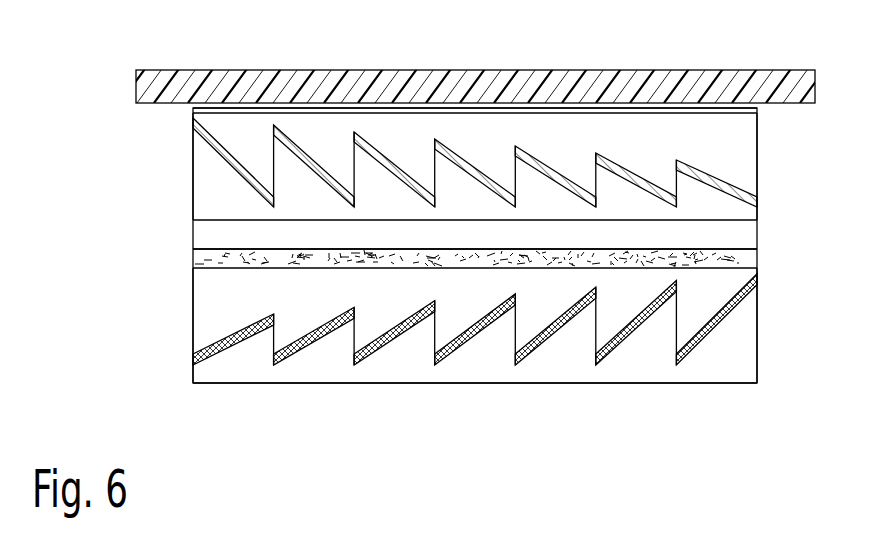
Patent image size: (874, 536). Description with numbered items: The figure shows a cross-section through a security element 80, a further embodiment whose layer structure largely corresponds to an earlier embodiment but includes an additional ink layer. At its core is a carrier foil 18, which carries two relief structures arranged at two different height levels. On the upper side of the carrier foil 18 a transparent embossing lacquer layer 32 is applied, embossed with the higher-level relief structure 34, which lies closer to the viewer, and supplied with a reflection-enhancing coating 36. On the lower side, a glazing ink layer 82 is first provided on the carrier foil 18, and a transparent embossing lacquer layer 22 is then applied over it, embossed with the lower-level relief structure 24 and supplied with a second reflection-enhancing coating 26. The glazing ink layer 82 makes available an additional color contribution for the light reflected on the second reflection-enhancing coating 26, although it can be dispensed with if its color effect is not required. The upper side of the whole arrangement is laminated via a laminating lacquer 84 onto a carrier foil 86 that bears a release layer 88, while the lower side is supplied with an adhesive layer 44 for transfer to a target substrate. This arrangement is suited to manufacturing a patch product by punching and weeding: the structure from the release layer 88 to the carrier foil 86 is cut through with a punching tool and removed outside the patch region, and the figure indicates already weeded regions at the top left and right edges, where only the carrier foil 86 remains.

The security element 80 is at (135, 383).
The carrier foil 86 is at (160, 78).
The release layer 88 is at (196, 110).
The laminating lacquer 84 is at (745, 140).
The transparent embossing lacquer layer 32 is at (205, 193).
The relief structure 34 is at (300, 160).
The reflection-enhancing coating 36 is at (728, 178).
The carrier foil 18 is at (745, 233).
The glazing ink layer 82 is at (745, 258).
The transparent embossing lacquer layer 22 is at (205, 310).
The relief structure 24 is at (314, 345).
The second reflection-enhancing coating 26 is at (730, 322).
The adhesive layer 44 is at (745, 362).